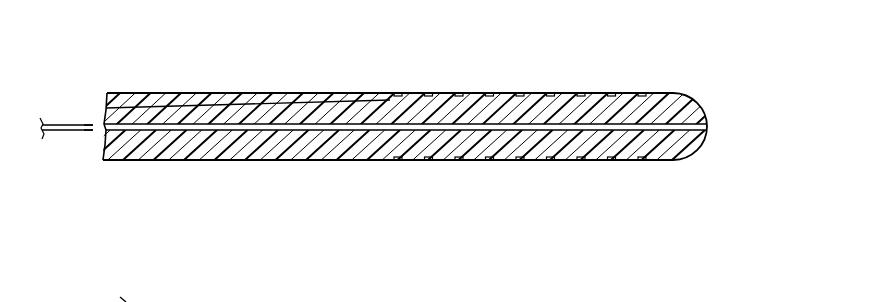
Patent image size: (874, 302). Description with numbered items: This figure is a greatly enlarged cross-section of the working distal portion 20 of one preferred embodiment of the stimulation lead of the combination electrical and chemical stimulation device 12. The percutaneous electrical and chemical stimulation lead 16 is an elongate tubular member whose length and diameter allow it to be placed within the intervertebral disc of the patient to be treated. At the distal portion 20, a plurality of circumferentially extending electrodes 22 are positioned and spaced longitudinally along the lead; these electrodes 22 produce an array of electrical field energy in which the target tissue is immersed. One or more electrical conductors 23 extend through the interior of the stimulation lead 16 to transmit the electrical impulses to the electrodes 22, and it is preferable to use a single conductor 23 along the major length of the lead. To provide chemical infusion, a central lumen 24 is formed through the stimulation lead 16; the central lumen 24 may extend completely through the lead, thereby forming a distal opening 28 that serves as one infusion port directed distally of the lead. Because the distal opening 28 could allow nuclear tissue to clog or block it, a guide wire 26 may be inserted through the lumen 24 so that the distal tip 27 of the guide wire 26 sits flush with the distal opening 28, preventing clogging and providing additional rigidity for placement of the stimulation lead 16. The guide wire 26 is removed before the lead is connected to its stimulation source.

The combination electrical and chemical stimulation device 12 is at (260, 73).
The percutaneous electrical and chemical stimulation lead 16 is at (363, 95).
The working distal portion 20 is at (666, 60).
The electrodes 22 is at (432, 161).
The electrical conductor 23 is at (296, 101).
The central lumen 24 is at (688, 125).
The guide wire 26 is at (57, 125).
The distal tip of the guide wire 27 is at (93, 125).
The distal opening 28 is at (707, 127).